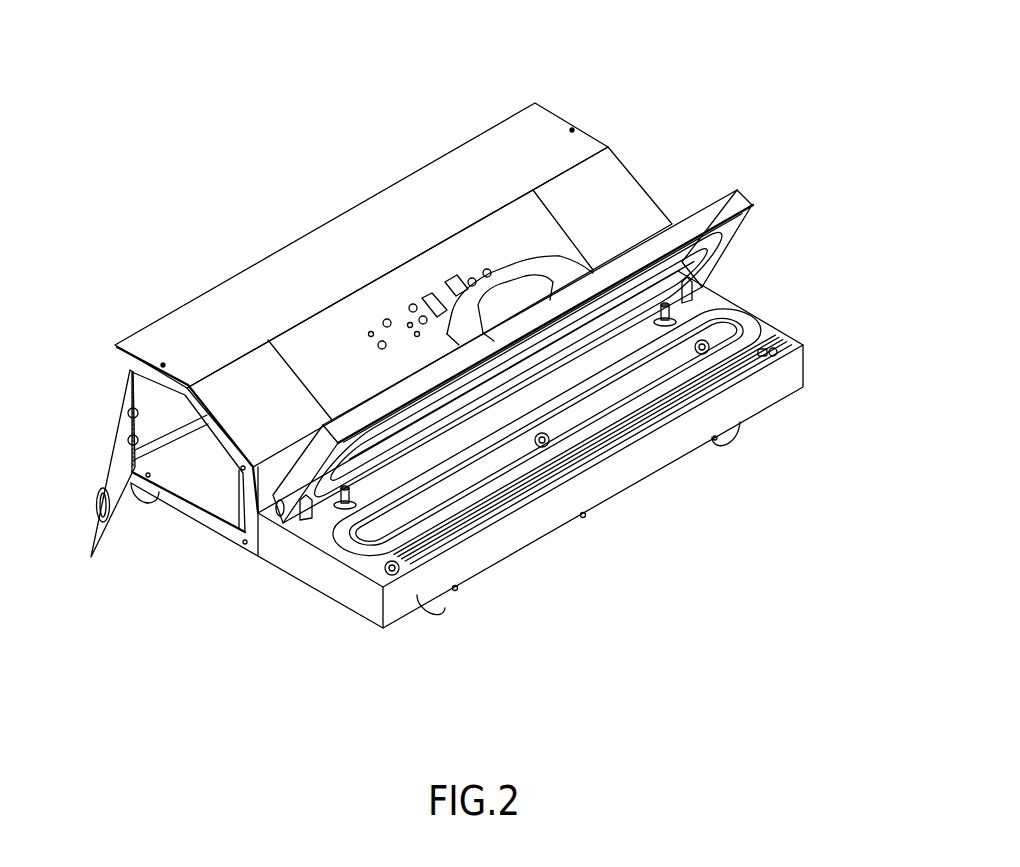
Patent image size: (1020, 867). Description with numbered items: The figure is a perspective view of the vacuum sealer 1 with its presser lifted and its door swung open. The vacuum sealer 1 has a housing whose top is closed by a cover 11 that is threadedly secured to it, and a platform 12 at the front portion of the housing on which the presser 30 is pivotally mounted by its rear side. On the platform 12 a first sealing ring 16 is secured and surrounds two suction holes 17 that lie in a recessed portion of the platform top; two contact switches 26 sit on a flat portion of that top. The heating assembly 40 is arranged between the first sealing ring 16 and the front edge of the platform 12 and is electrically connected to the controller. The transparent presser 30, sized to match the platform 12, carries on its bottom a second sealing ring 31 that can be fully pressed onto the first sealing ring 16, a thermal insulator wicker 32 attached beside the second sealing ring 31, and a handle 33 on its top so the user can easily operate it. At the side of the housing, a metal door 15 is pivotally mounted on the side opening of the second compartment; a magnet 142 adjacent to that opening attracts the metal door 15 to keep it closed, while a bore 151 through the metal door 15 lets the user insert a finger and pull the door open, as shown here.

The vacuum sealer 1 is at (150, 178).
The cover 11 is at (358, 242).
The platform 12 is at (516, 484).
The metal door 15 is at (110, 501).
The bore 151 is at (107, 507).
The magnet 142 is at (245, 503).
The first sealing ring 16 is at (756, 332).
The suction holes 17 is at (706, 352).
The contact switches 26 is at (705, 288).
The presser 30 is at (587, 270).
The second sealing ring 31 is at (722, 240).
The thermal insulator wicker 32 is at (628, 278).
The handle 33 is at (547, 253).
The heating assembly 40 is at (471, 552).